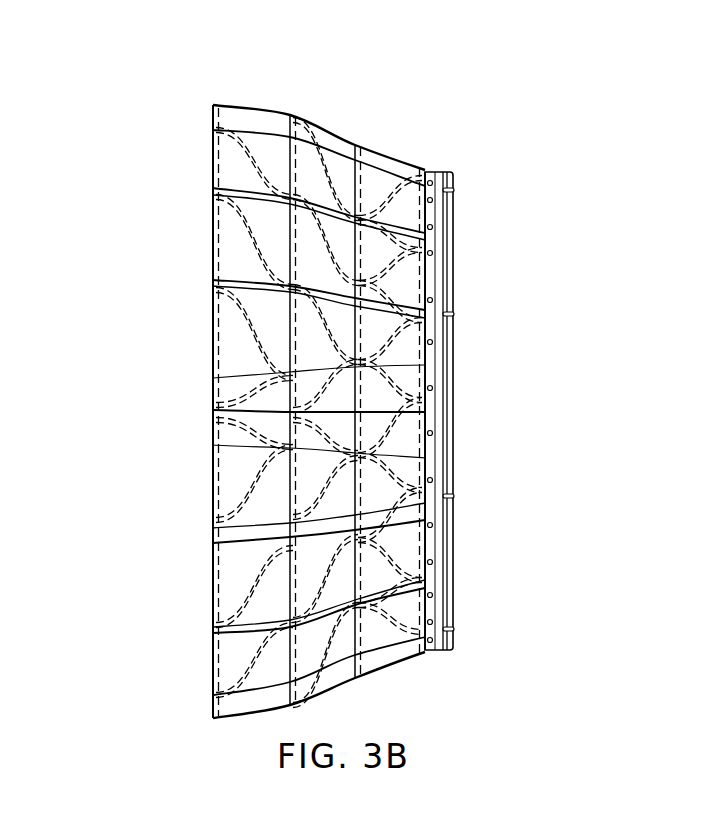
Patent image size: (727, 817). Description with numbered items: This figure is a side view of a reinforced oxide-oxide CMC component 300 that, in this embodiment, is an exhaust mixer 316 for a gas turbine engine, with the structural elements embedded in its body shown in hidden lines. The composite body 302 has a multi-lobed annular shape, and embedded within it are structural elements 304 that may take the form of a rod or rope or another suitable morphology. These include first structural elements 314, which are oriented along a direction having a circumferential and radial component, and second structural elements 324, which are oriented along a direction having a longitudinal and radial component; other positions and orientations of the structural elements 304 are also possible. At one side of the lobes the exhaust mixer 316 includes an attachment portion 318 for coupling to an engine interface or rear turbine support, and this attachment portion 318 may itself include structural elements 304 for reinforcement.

The reinforced oxide-oxide CMC component 300 is at (330, 367).
The exhaust mixer 316 is at (330, 367).
The composite body 302 is at (248, 104).
The structural elements 304 is at (330, 400).
The first structural elements 314 is at (362, 188).
The second structural elements 324 is at (218, 170).
The attachment portion 318 is at (448, 172).